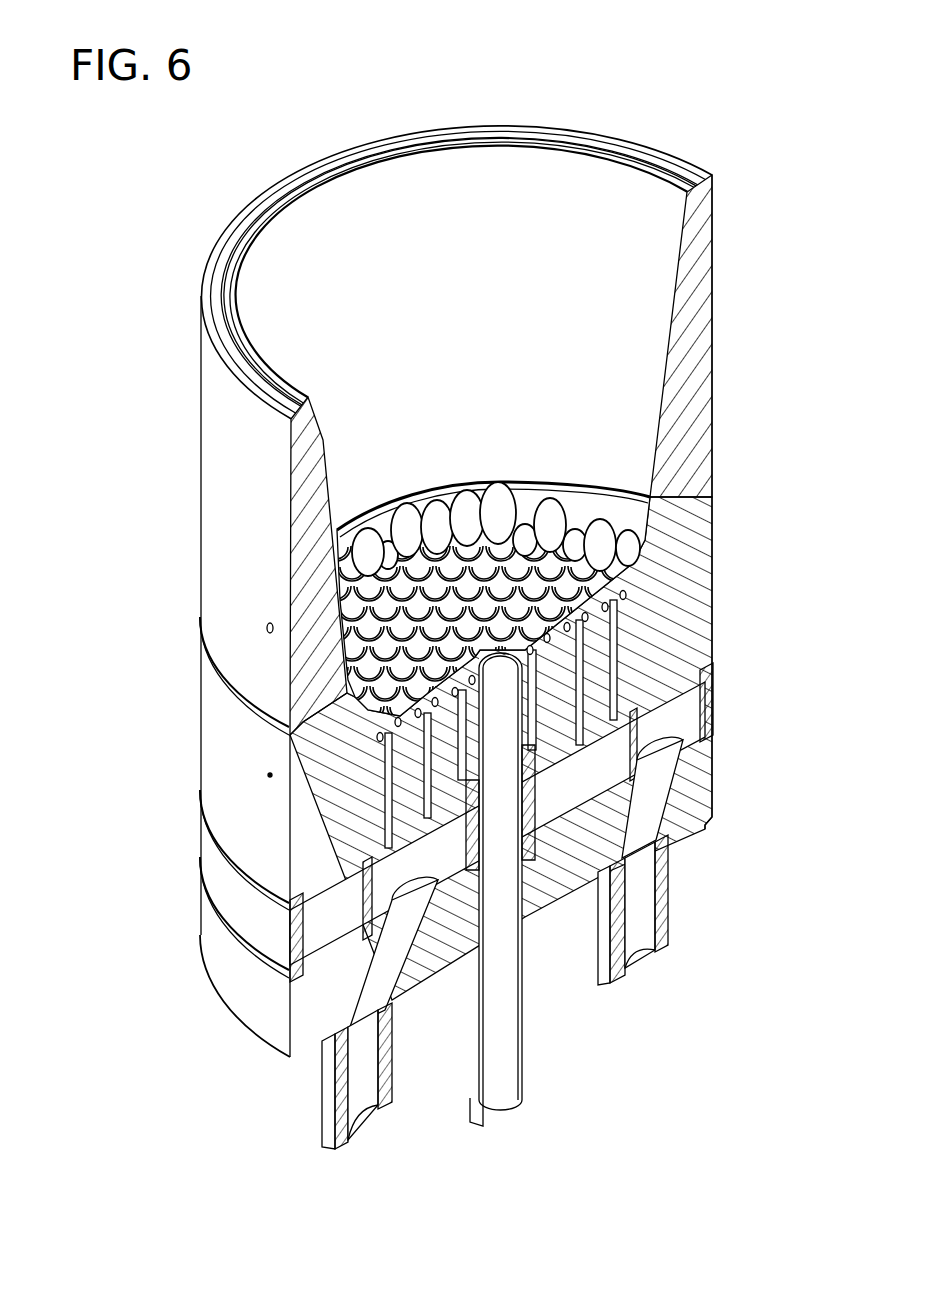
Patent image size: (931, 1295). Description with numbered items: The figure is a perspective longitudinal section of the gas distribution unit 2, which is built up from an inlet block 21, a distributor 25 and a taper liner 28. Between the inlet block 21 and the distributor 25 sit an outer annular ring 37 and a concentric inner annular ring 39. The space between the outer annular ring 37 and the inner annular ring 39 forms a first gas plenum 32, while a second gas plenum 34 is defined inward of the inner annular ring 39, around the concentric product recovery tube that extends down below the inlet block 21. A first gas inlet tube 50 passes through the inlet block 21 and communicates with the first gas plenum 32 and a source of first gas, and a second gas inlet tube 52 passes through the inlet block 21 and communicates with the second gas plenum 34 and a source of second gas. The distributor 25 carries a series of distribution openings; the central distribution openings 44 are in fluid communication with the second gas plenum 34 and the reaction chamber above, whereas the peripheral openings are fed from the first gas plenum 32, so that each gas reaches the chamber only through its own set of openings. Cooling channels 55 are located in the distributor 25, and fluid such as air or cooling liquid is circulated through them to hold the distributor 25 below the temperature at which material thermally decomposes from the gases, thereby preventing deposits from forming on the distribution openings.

The gas distribution unit 2 is at (114, 240).
The taper liner 28 is at (692, 328).
The distributor 25 is at (225, 735).
The inlet block 21 is at (213, 927).
The cooling channels 55 is at (612, 600).
The central distribution openings 44 is at (618, 652).
The outer annular ring 37 is at (700, 688).
The inner annular ring 39 is at (640, 728).
The first gas inlet tube 50 is at (660, 900).
The second gas inlet tube 52 is at (327, 1115).
The first gas plenum 32 is at (334, 932).
The second gas plenum 34 is at (562, 784).